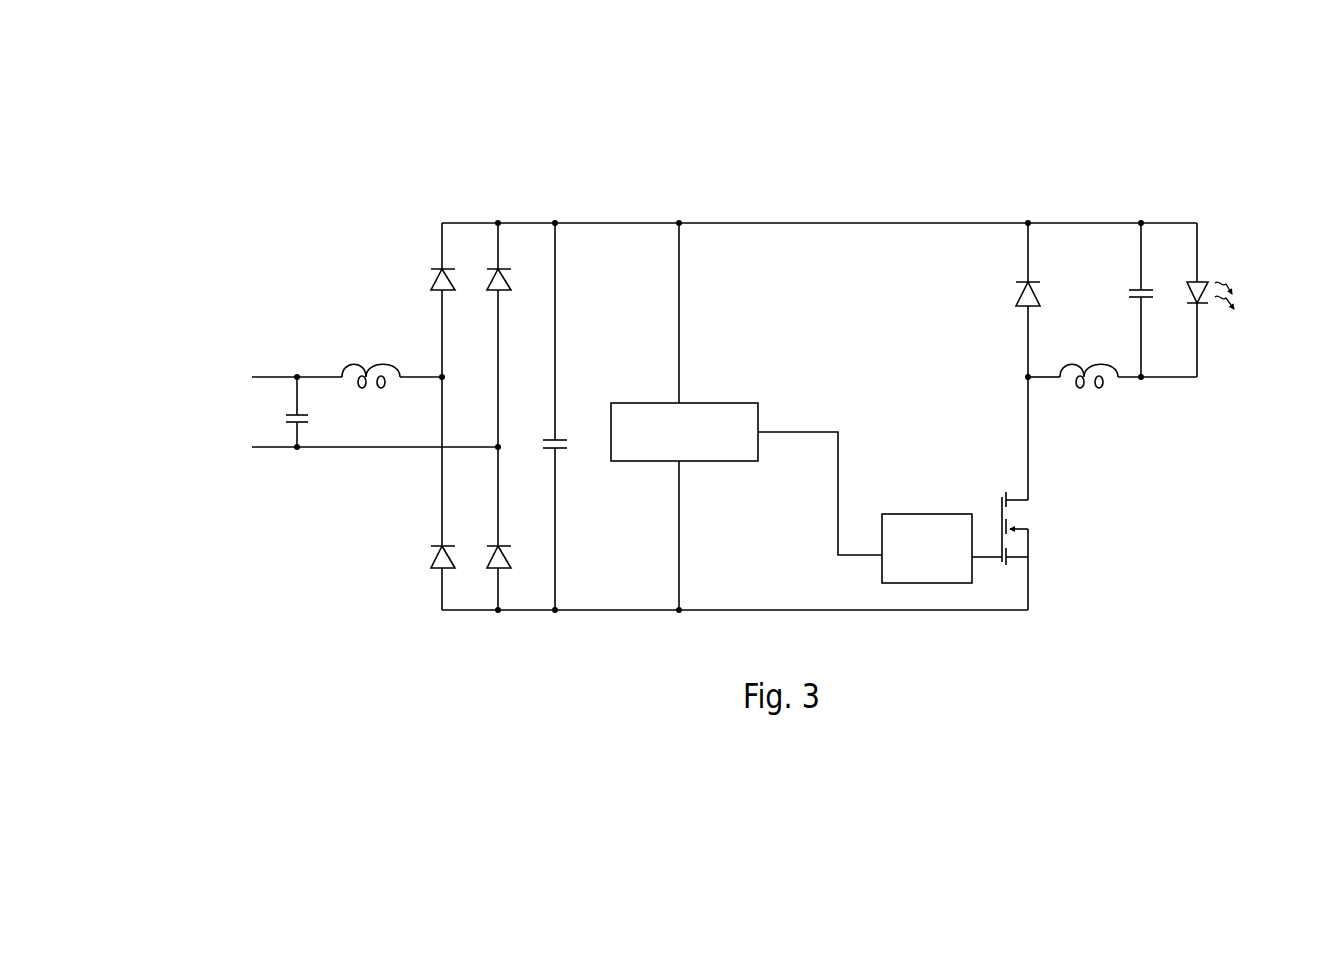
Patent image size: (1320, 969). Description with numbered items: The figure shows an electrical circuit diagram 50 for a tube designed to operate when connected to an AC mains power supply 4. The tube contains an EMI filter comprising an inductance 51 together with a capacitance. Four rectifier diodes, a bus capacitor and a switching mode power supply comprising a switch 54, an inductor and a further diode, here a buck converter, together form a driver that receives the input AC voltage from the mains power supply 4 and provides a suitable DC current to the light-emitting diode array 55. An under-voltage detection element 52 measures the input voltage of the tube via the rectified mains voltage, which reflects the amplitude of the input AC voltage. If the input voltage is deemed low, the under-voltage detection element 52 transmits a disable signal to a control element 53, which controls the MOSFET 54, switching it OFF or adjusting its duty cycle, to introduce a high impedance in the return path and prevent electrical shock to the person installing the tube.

The mains power supply 4 is at (205, 392).
The electrical circuit diagram 50 is at (1086, 132).
The inductance L1 51 is at (366, 345).
The under-voltage detection element 52 is at (710, 402).
The control element 53 is at (891, 512).
The MOSFET 54 is at (1037, 520).
The LED array 55 is at (1217, 245).